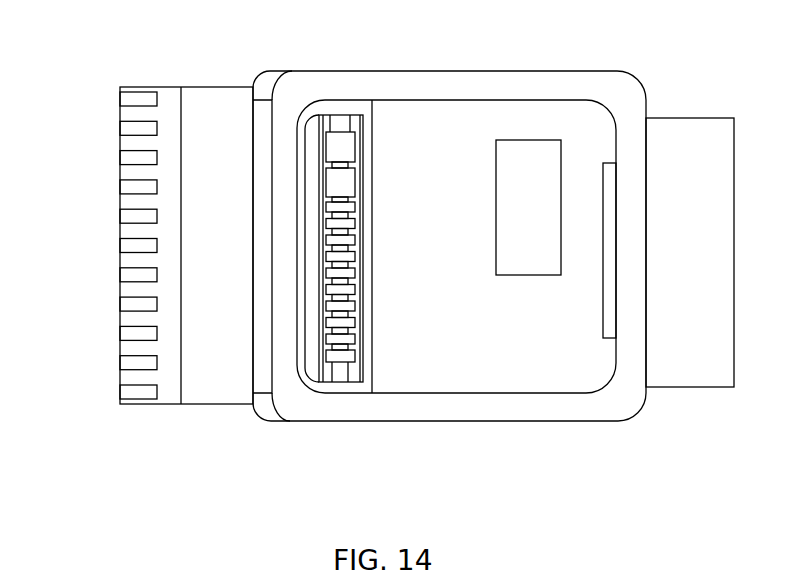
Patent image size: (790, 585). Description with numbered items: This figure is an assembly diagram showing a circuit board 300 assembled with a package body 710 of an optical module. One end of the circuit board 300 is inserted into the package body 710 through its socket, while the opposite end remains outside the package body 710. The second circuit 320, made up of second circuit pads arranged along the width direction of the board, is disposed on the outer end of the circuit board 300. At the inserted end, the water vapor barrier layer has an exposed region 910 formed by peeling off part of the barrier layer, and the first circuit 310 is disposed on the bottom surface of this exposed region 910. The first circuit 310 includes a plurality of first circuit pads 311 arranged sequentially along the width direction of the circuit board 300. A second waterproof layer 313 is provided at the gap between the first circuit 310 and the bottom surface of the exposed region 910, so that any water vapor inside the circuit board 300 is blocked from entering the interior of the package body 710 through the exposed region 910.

The circuit board 300 is at (167, 97).
The second circuit 320 is at (130, 245).
The package body 710 is at (457, 80).
The exposed region 910 is at (317, 123).
The first circuit 310 is at (467, 305).
The first circuit pad 311 is at (335, 357).
The second waterproof layer 313 is at (353, 345).